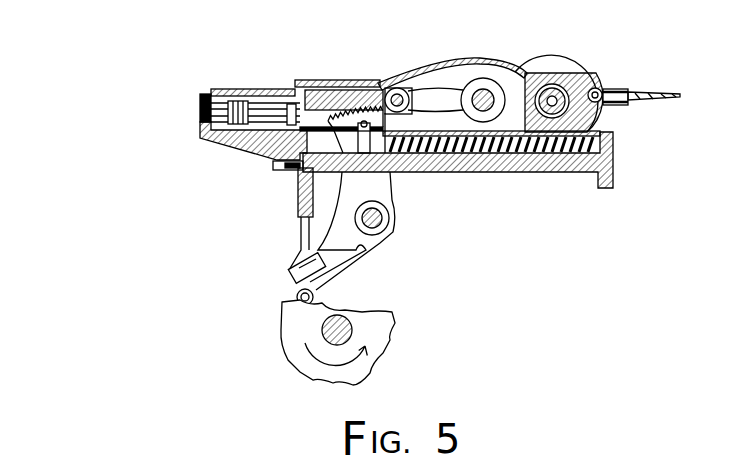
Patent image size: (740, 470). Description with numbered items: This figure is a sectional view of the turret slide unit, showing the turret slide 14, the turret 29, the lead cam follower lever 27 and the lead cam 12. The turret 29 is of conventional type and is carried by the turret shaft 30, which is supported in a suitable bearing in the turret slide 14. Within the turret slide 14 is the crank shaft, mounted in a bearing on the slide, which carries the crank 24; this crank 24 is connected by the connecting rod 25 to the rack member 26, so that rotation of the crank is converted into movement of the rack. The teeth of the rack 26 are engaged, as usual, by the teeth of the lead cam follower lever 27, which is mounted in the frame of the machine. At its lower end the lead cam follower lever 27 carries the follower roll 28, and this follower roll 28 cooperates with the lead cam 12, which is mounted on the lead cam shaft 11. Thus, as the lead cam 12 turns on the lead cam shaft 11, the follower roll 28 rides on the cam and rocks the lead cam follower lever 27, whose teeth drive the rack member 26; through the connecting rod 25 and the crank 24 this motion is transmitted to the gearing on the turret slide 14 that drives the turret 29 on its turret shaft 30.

The lead cam shaft 11 is at (323, 328).
The lead cam 12 is at (385, 333).
The turret slide 14 is at (413, 73).
The crank 24 is at (473, 90).
The connecting rod 25 is at (443, 88).
The rack member 26 is at (330, 85).
The lead cam follower lever 27 is at (380, 187).
The follower roll 28 is at (317, 295).
The turret 29 is at (587, 60).
The turret shaft 30 is at (599, 88).